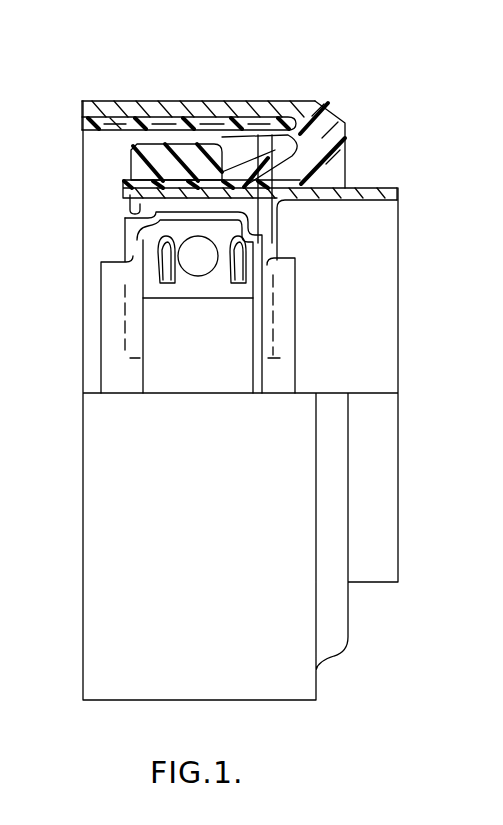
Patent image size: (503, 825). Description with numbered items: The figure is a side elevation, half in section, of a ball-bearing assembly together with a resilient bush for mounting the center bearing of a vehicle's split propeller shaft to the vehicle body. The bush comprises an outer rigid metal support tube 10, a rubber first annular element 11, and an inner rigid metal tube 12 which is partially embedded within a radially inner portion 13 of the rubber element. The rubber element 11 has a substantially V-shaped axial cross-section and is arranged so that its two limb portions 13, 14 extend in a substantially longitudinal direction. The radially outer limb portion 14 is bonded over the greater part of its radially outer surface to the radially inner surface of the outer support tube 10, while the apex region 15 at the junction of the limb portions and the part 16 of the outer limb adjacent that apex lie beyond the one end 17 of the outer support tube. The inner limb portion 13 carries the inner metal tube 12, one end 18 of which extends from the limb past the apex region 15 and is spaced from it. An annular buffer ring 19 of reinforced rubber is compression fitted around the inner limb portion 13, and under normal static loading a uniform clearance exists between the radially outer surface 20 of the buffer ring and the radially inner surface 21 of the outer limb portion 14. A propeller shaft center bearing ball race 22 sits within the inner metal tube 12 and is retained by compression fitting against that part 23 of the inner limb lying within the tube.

The outer rigid metal support tube 10 is at (172, 103).
The rubber first annular element 11 is at (340, 105).
The inner rigid metal tube 12 is at (357, 192).
The radially inner limb portion 13 is at (128, 207).
The radially outer limb portion 14 is at (90, 120).
The apex region 15 is at (305, 183).
The part of the outer limb portion adjacent the apex region 16 is at (295, 112).
The one end of the outer support tube 17 is at (297, 105).
The one end of the inner metal tube 18 is at (398, 200).
The annular buffer ring 19 is at (130, 162).
The radially outer surface of the buffer ring 20 is at (233, 247).
The radially inner surface of the outer limb portion 21 is at (115, 130).
The propeller shaft center bearing ball race 22 is at (174, 266).
The part of the radially inner limb portion lying within the inner metal tube 23 is at (247, 249).